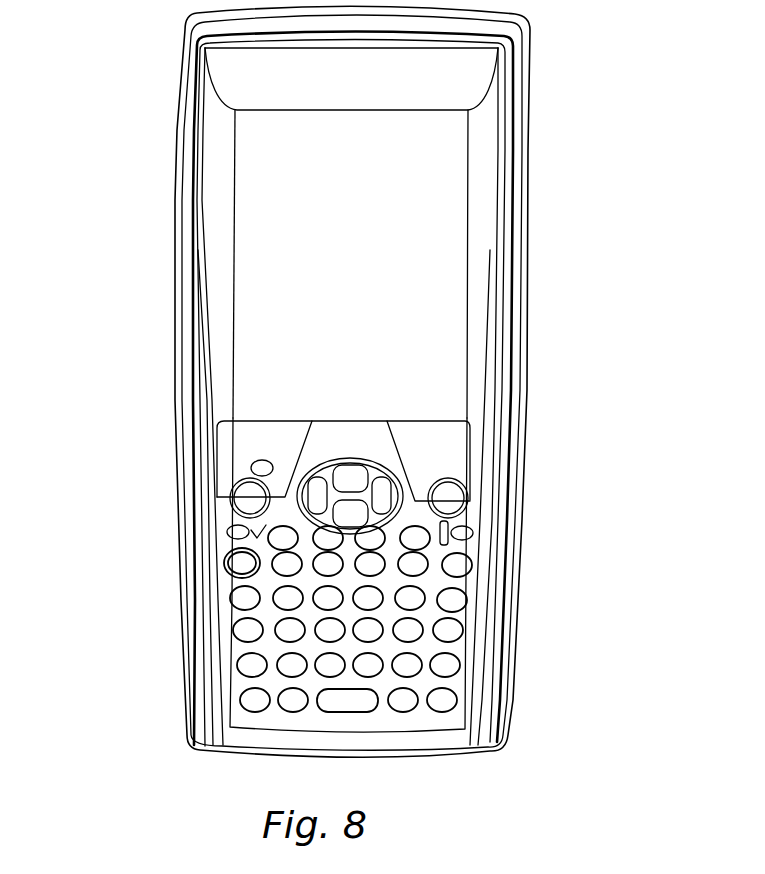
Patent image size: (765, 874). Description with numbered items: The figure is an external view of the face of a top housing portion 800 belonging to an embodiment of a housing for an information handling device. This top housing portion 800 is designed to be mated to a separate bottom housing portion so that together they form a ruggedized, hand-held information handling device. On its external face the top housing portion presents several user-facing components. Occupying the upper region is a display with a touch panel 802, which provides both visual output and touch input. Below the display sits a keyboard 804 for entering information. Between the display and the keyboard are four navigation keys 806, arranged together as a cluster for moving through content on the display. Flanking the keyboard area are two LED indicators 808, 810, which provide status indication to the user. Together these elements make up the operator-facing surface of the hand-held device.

The top housing portion 800 is at (557, 218).
The display with a touch panel 802 is at (262, 148).
The keyboard 804 is at (432, 617).
The navigation keys 806 is at (387, 463).
The LED indicator 808 is at (474, 534).
The LED indicator 810 is at (226, 532).